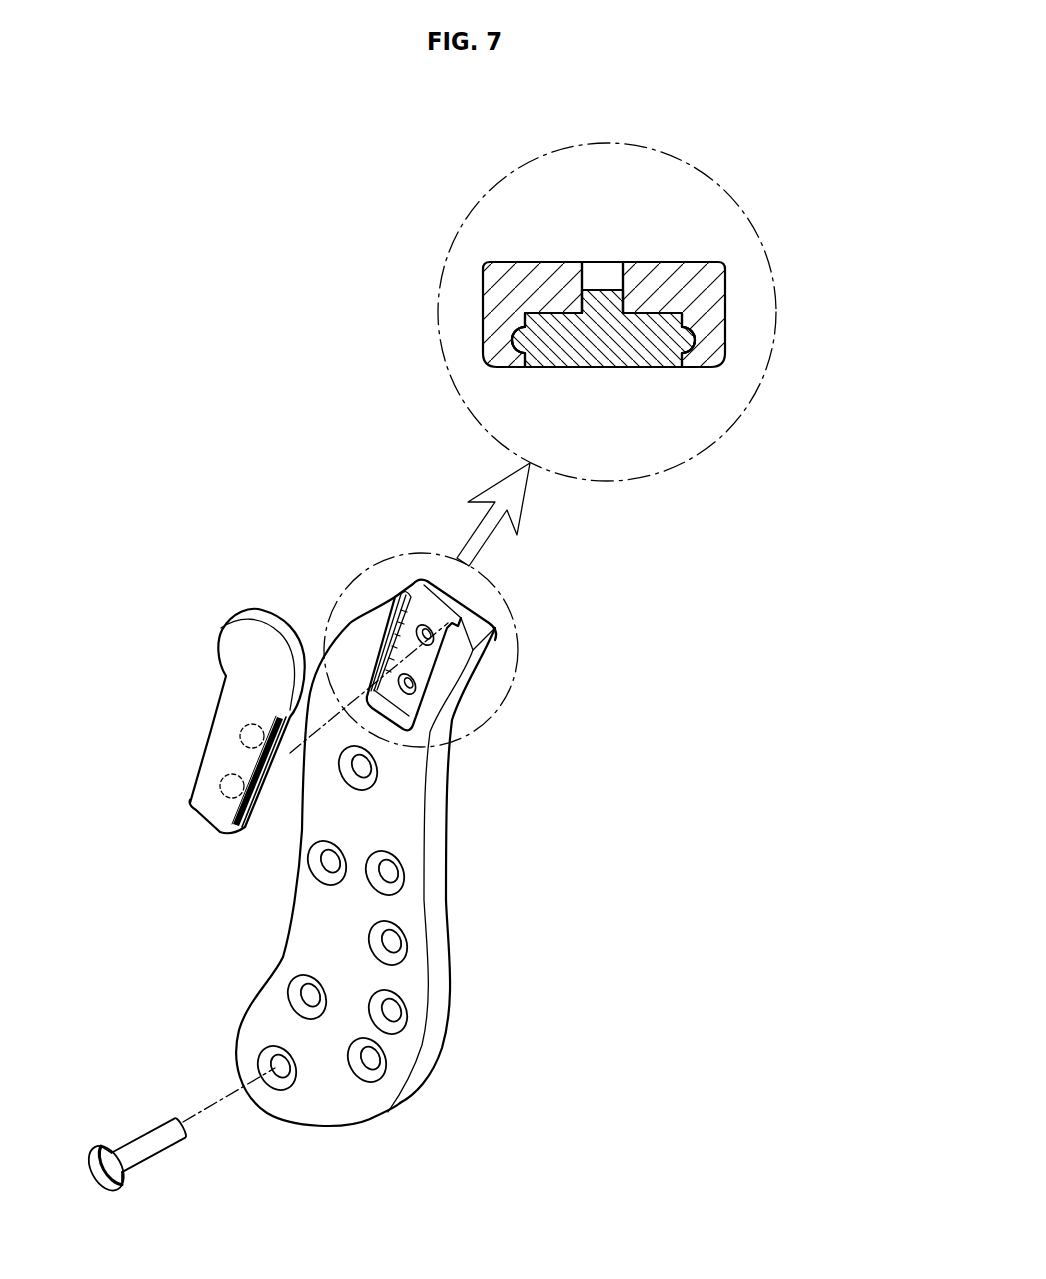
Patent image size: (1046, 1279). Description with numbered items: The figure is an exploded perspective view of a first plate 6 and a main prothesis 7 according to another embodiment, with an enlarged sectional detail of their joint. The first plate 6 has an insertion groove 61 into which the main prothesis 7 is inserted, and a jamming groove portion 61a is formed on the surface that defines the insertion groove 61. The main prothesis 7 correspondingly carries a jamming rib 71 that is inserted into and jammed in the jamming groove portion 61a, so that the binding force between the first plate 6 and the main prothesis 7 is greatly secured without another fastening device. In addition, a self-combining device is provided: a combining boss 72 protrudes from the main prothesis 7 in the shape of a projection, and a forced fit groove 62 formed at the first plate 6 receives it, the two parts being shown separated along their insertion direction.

The first plate 6 is at (737, 262).
The main prothesis 7 is at (205, 655).
The insertion groove 61 is at (423, 663).
The jamming groove portion 61a is at (397, 633).
The forced fit groove 62 is at (400, 678).
The jamming rib 71 is at (245, 808).
The combining boss 72 is at (240, 733).